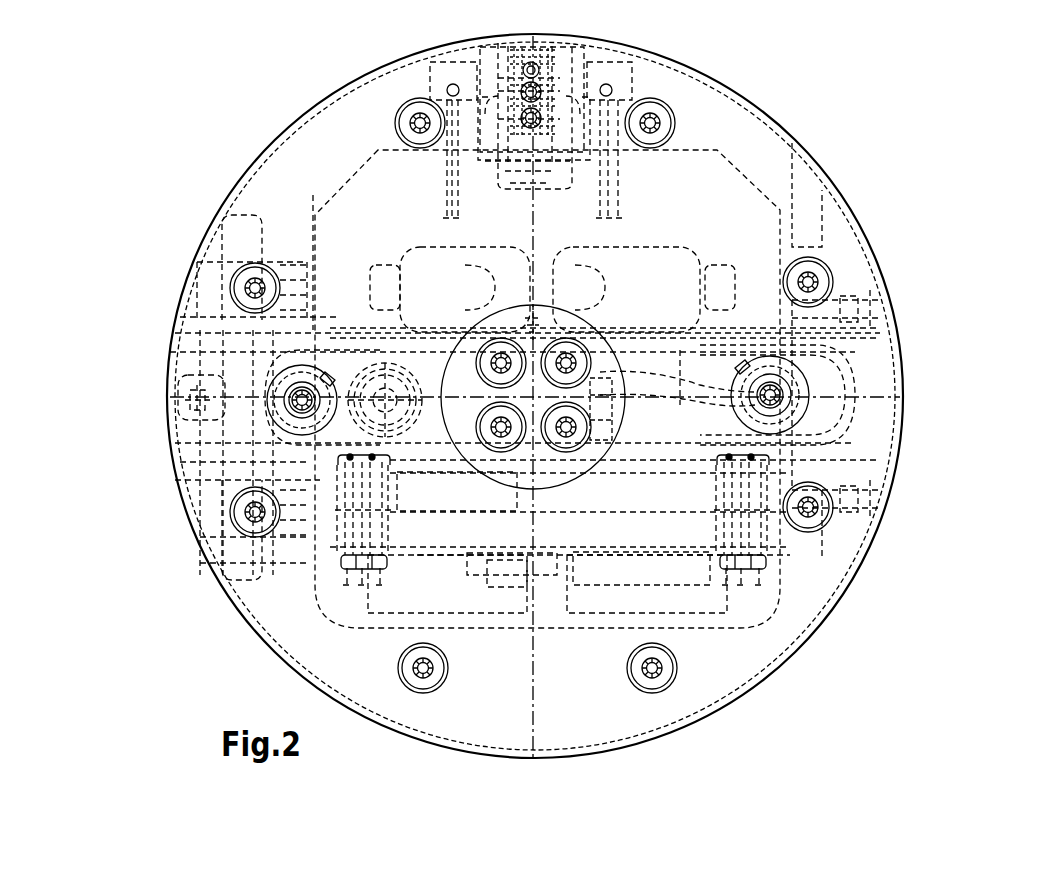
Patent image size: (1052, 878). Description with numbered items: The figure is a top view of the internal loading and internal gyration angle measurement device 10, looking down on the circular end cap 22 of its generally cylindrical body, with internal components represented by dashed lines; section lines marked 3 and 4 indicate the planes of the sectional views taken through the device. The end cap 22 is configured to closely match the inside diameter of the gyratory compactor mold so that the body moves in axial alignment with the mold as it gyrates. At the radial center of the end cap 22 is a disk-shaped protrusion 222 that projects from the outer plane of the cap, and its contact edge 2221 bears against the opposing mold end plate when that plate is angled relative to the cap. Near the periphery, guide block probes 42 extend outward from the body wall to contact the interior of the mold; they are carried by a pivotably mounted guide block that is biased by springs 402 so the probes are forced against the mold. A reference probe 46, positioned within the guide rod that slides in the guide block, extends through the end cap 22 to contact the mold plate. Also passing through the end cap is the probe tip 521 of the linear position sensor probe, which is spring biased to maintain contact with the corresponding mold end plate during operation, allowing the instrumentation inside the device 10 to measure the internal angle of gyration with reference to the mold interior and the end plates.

The internal loading and internal gyration angle measurement device 10 is at (541, 393).
The end cap 22 is at (743, 657).
The guide block probe 42 is at (172, 403).
The reference probe 46 is at (305, 400).
The protrusion 222 is at (553, 457).
The contact edge 2221 is at (627, 405).
The spring 402 is at (300, 262).
The probe tip 521 is at (778, 405).
The section line 3- 3 is at (165, 400).
The section line 4- 4 is at (531, 36).